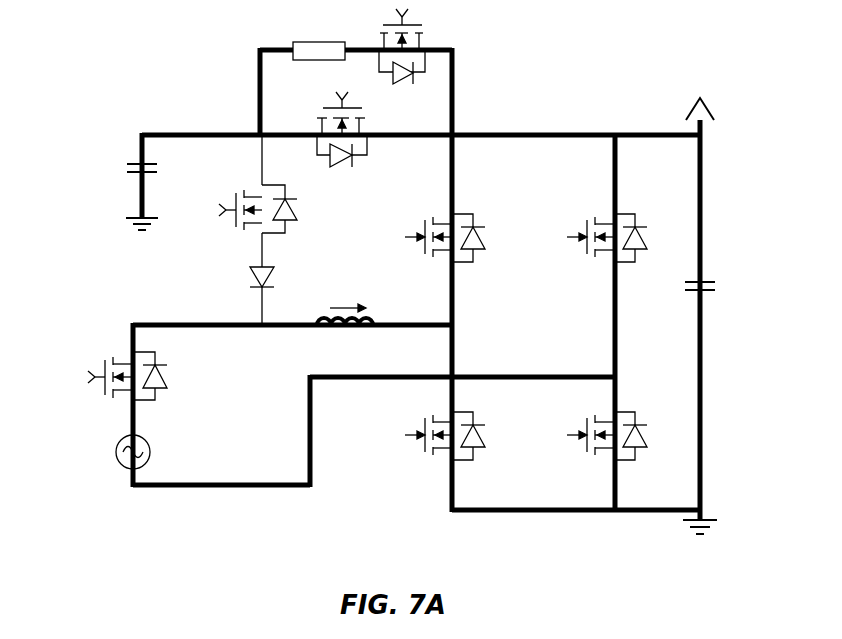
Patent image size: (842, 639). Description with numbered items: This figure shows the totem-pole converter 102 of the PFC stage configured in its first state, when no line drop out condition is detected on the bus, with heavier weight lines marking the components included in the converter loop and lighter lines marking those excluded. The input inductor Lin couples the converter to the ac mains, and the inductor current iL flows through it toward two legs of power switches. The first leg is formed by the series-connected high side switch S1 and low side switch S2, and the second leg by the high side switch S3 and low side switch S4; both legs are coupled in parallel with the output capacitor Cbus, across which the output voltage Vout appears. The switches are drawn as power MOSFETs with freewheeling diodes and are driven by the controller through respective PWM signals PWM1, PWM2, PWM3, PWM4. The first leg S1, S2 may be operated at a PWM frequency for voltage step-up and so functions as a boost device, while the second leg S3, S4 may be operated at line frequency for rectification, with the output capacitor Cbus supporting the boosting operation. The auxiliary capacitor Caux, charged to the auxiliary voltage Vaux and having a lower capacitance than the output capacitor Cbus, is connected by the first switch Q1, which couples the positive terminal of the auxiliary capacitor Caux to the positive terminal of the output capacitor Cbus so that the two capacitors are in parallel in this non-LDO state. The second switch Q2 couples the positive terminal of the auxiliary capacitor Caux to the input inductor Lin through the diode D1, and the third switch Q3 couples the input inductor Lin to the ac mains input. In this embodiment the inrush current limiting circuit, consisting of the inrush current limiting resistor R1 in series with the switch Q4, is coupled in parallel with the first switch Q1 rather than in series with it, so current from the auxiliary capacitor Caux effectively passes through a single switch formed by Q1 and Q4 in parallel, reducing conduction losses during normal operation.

The totem-pole converter 102 is at (92, 73).
The inrush current limiting resistor R1 is at (319, 39).
The switch Q4 is at (411, 54).
The first switch Q1 is at (352, 129).
The second switch Q2 is at (258, 184).
The third switch Q3 is at (127, 362).
The diode D1 is at (275, 279).
The auxiliary voltage Vaux is at (82, 159).
The auxiliary capacitor Caux is at (166, 190).
The input inductor Lin is at (345, 337).
The inductor current iL is at (348, 299).
The high side switch S1 is at (454, 221).
The low side switch S2 is at (454, 420).
The high side switch S3 is at (616, 221).
The low side switch S4 is at (616, 420).
The PWM signal PWM1 is at (385, 237).
The PWM signal PWM2 is at (385, 435).
The PWM signal PWM3 is at (547, 237).
The PWM signal PWM4 is at (547, 435).
The output voltage Vout is at (700, 95).
The output capacitor Cbus is at (724, 400).